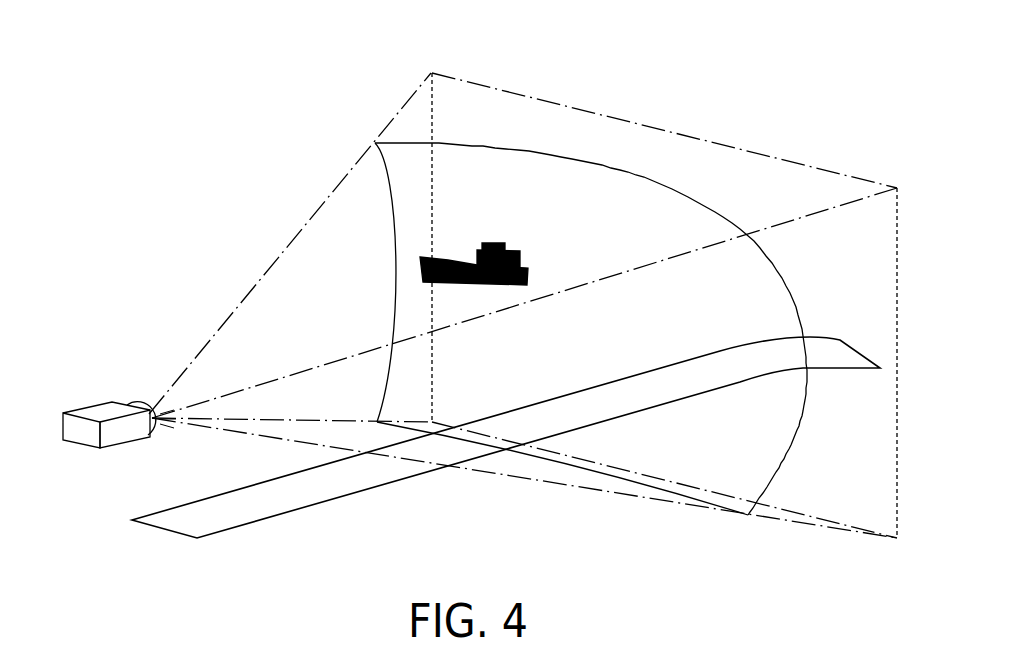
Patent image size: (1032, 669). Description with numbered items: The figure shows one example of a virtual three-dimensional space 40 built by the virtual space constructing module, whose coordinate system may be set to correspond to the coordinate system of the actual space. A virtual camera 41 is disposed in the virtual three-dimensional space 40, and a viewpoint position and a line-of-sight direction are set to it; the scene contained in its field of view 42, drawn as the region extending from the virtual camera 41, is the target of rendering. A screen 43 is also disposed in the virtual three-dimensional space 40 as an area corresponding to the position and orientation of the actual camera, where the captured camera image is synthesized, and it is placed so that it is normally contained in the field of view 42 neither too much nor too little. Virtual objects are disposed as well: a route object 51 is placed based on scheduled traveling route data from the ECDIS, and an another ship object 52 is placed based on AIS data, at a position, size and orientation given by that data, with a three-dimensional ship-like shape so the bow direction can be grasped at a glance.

The virtual three-dimensional space 40 is at (212, 142).
The virtual camera 41 is at (100, 420).
The field of view 42 is at (294, 236).
The screen 43 is at (417, 142).
The route object 51 is at (718, 368).
The another ship object 52 is at (497, 245).